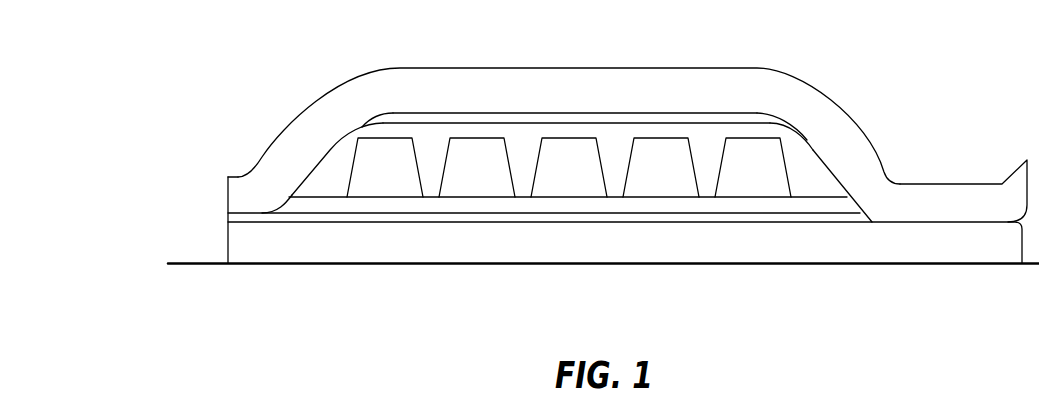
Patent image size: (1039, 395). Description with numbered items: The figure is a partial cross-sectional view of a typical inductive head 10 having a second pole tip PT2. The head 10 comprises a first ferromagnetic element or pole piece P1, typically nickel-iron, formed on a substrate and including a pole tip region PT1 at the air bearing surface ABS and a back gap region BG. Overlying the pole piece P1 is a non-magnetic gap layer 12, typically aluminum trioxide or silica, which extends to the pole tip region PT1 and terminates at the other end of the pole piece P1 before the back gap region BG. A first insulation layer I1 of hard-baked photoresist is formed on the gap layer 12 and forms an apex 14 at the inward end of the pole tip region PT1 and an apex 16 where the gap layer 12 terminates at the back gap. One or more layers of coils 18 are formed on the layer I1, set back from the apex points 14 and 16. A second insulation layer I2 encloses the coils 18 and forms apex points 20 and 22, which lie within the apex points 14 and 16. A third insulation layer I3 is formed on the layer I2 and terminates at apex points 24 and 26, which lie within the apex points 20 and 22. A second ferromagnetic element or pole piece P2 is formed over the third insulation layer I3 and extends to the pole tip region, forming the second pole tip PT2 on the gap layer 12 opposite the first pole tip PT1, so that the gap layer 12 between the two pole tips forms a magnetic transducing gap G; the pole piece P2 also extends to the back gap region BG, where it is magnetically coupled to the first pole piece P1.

The inductive head 10 is at (490, 50).
The gap layer 12 is at (475, 215).
The apex 14 is at (283, 207).
The apex 16 is at (860, 212).
The coils 18 is at (488, 178).
The apex point 20 is at (292, 197).
The apex point 22 is at (845, 190).
The apex point 24 is at (347, 120).
The apex point 26 is at (785, 122).
The first ferromagnetic element or pole piece P1 is at (625, 255).
The second ferromagnetic element or pole piece P2 is at (588, 102).
The first pole tip region PT1 is at (228, 242).
The second pole tip PT2 is at (228, 189).
The air bearing surface ABS is at (217, 202).
The magnetic transducing gap G is at (228, 218).
The back gap region BG is at (953, 214).
The first insulation layer I1 is at (558, 205).
The second insulation layer I2 is at (617, 137).
The third insulation layer I3 is at (712, 117).